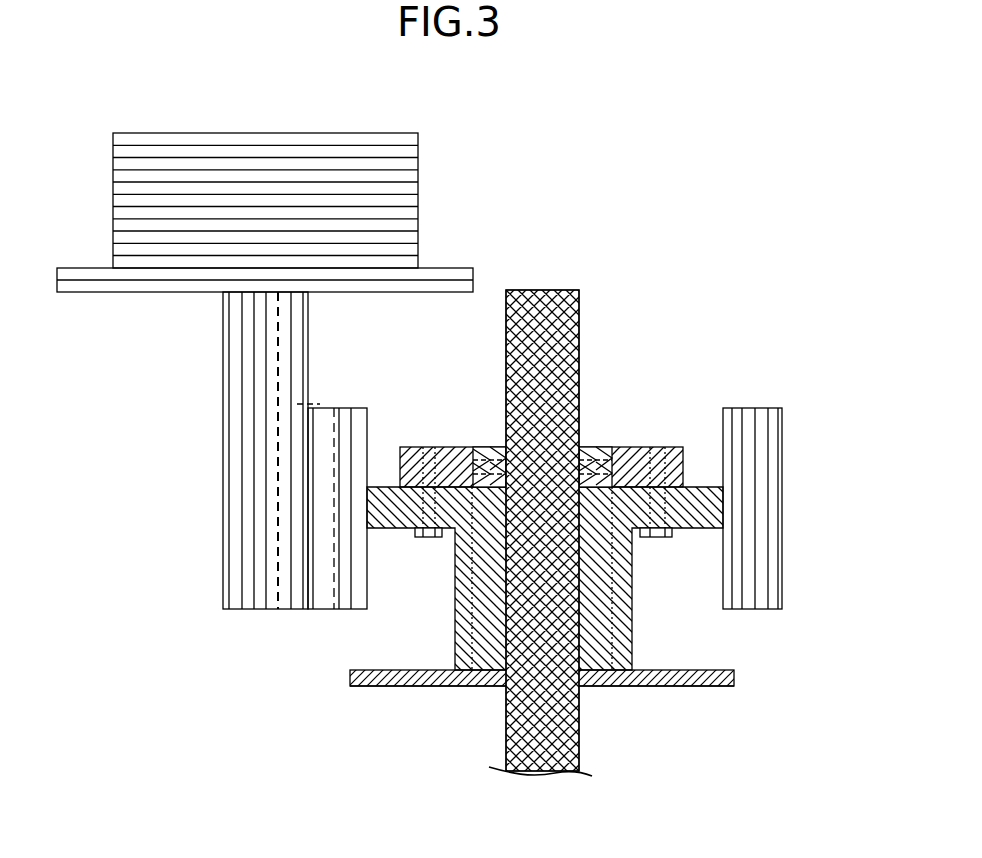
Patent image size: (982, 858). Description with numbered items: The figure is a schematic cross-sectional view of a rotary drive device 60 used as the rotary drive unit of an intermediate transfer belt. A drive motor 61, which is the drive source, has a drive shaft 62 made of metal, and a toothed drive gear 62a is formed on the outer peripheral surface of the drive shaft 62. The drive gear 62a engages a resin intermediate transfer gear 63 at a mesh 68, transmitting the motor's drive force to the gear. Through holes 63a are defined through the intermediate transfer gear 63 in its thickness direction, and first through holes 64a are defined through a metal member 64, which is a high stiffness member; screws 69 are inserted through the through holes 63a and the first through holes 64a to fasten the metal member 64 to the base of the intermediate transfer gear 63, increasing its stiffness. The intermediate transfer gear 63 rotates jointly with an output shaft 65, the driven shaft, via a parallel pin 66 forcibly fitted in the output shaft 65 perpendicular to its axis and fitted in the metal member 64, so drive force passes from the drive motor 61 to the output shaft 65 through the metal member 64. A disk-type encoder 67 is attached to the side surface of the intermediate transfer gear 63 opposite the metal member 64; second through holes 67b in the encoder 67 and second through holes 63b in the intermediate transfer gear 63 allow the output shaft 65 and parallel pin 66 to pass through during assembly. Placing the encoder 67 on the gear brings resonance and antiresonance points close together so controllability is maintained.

The rotary drive device 60 is at (534, 147).
The drive motor 61 is at (418, 133).
The drive shaft 62 is at (228, 610).
The drive gear 62a is at (240, 393).
The intermediate transfer gear 63 is at (368, 407).
The through holes 63a is at (419, 530).
The second through holes 63b is at (633, 640).
The metal member 64 is at (683, 447).
The first through holes 64a is at (445, 447).
The output shaft 65 is at (579, 290).
The parallel pin 66 is at (606, 447).
The encoder 67 is at (735, 670).
The second through holes 67b is at (625, 688).
The mesh 68 is at (316, 614).
The screws 69 is at (428, 540).